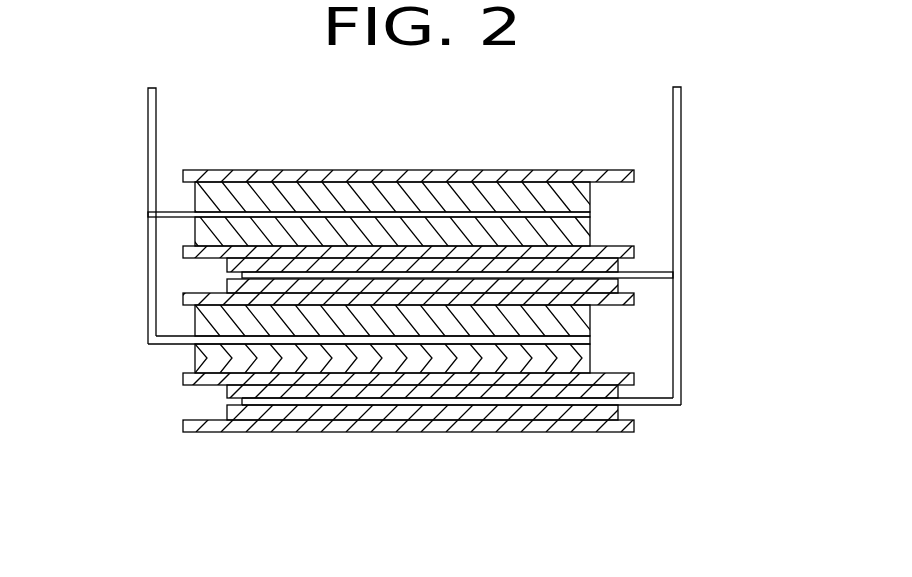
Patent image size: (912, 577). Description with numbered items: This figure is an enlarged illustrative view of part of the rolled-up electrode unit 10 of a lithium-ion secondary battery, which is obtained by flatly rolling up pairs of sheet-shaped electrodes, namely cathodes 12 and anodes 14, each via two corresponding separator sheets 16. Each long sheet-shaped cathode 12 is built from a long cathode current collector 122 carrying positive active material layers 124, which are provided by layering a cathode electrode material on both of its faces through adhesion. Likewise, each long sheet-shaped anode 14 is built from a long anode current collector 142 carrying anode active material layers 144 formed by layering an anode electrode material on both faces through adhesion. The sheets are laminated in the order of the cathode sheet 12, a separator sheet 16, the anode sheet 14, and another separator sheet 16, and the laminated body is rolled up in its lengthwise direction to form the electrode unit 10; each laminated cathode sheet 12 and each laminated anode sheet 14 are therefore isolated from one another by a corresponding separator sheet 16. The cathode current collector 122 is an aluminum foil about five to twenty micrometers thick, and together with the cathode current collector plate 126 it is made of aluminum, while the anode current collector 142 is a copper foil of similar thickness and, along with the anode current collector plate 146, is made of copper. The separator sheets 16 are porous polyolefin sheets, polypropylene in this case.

The electrode unit 10 is at (440, 443).
The cathode 12 is at (62, 165).
The cathode current collector 122 is at (152, 226).
The positive active material layer 124 is at (205, 198).
The cathode current collector plate 126 is at (148, 108).
The anode 14 is at (783, 225).
The anode current collector 142 is at (648, 276).
The anode active material layer 144 is at (618, 262).
The anode current collector plate 146 is at (681, 160).
The separator sheet 16 is at (595, 178).